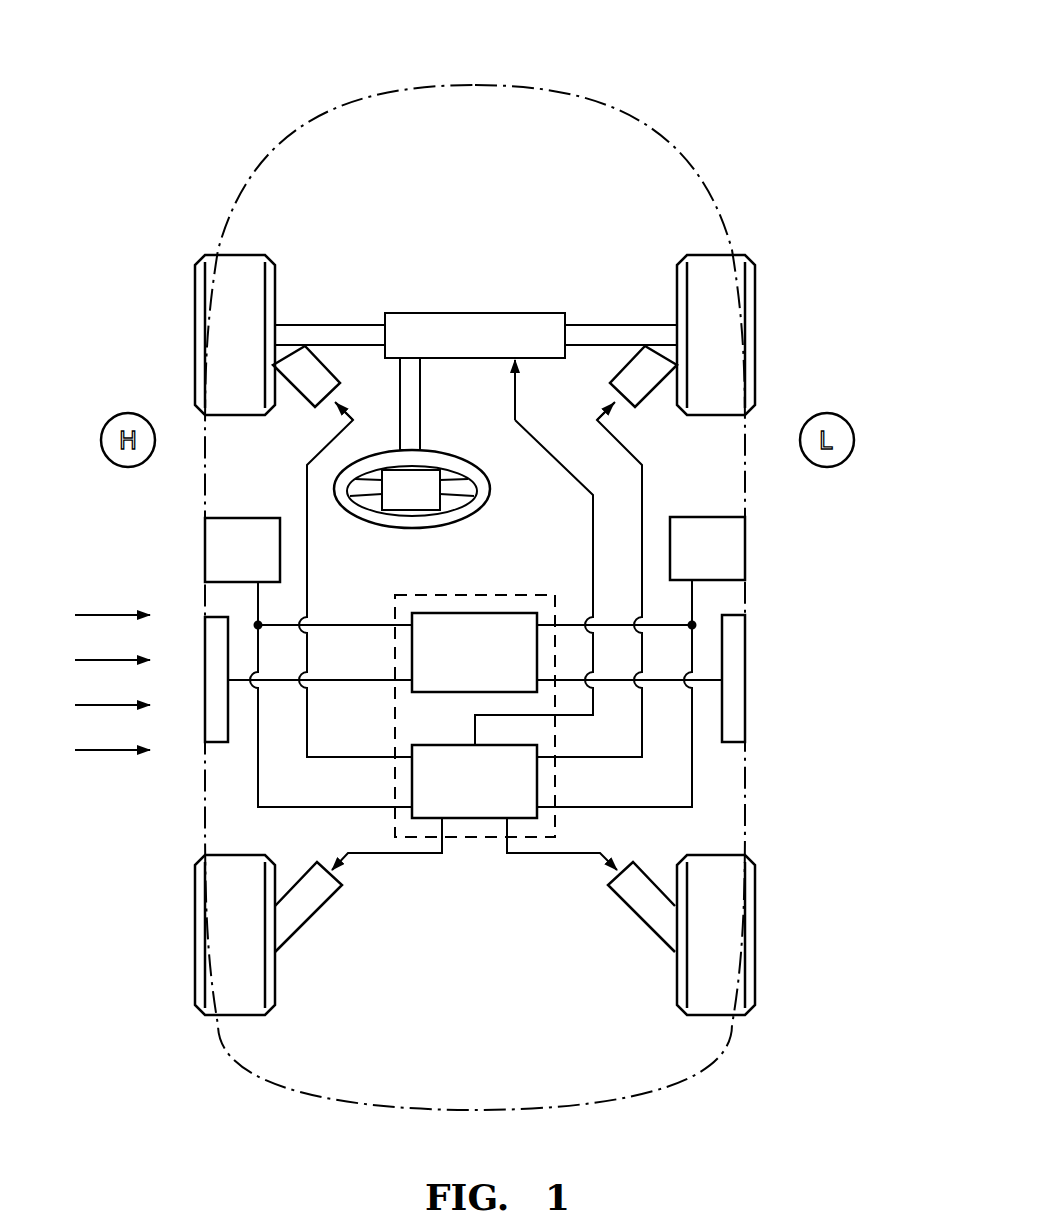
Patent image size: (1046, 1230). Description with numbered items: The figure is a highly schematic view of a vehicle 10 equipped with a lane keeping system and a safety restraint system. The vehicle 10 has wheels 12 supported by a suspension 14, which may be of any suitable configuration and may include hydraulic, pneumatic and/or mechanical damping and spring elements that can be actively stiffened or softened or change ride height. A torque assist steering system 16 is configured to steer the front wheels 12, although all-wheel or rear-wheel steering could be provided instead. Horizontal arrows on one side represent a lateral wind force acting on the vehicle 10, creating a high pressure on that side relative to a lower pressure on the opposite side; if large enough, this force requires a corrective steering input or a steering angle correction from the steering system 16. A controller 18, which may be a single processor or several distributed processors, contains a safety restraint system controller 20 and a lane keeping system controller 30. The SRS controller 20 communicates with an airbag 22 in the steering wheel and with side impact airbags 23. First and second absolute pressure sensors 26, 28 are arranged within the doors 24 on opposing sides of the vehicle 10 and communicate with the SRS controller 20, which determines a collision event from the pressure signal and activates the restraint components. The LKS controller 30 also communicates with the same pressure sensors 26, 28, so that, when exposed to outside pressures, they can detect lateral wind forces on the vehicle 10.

The vehicle 10 is at (605, 56).
The wheels 12 is at (200, 262).
The suspension 14 is at (303, 385).
The torque assist steering system 16 is at (535, 312).
The controller 18 is at (438, 593).
The safety restraint system (SRS) controller 20 is at (480, 613).
The airbag 22 is at (412, 443).
The side impact airbags 23 is at (213, 735).
The doors 24 is at (205, 538).
The first absolute pressure sensor 26 is at (235, 517).
The second absolute pressure sensor 28 is at (713, 518).
The lane keeping system (LKS) controller 30 is at (472, 818).